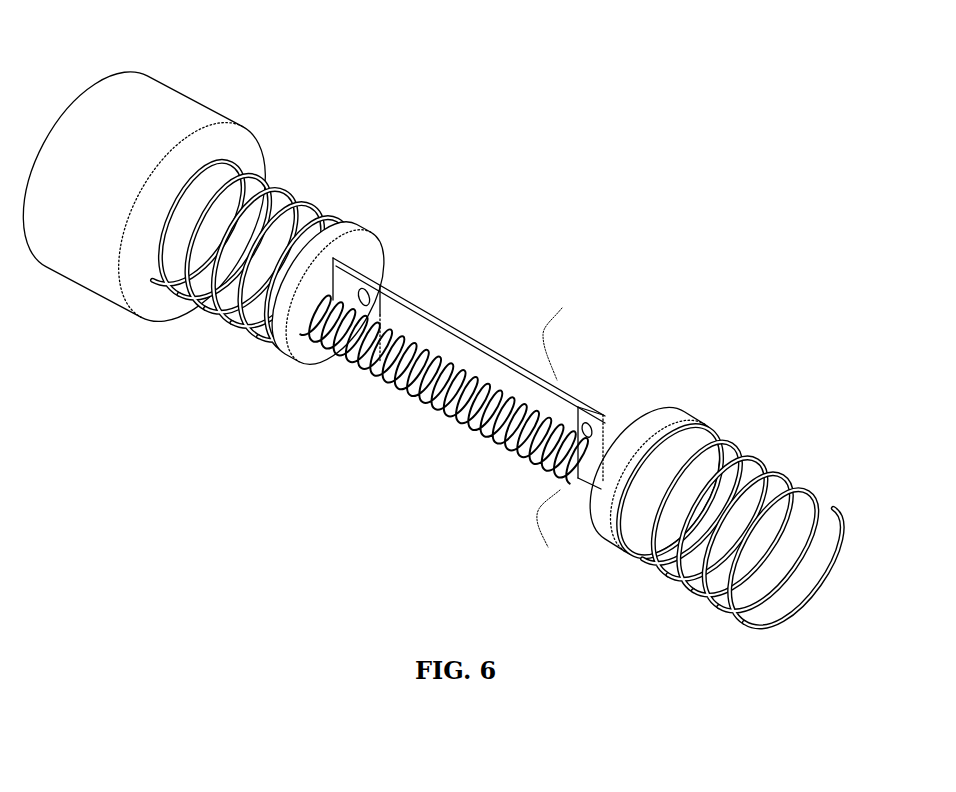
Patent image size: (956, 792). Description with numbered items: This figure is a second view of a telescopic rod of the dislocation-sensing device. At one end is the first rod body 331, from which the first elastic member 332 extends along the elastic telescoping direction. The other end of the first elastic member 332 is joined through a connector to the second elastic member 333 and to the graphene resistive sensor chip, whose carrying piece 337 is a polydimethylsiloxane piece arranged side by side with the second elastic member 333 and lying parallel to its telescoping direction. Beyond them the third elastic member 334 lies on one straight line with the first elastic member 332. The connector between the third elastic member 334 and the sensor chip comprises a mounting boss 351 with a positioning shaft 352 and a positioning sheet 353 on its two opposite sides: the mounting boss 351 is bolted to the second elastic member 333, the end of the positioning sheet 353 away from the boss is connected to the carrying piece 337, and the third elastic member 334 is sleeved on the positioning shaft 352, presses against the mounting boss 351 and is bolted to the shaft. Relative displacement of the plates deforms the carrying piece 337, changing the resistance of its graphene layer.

The first rod body 331 is at (152, 112).
The first elastic member 332 is at (312, 214).
The second elastic member 333 is at (312, 337).
The third elastic member 334 is at (802, 493).
The carrying piece 337 is at (442, 337).
The mounting boss 351 is at (657, 415).
The positioning shaft 352 is at (672, 477).
The positioning sheet 353 is at (602, 432).